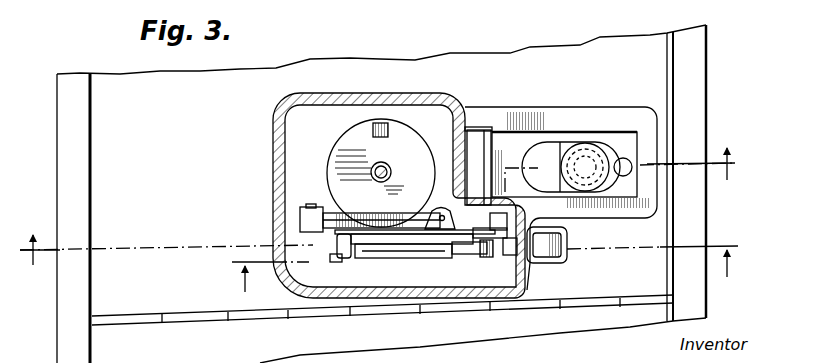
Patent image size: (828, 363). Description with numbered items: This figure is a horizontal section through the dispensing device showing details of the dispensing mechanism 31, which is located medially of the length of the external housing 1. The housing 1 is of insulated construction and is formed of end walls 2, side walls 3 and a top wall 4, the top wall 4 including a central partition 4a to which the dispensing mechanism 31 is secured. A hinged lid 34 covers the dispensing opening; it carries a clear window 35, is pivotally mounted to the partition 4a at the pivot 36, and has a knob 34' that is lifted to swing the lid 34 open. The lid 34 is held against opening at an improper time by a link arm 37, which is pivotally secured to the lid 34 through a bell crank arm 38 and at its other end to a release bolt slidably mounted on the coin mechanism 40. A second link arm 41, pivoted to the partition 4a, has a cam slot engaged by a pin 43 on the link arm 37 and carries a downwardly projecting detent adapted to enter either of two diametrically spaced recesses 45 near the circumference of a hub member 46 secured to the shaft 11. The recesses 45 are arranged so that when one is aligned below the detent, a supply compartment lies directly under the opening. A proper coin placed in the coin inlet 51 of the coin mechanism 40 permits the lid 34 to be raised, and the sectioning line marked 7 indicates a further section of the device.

The external housing 1 is at (706, 66).
The side walls 3 is at (58, 142).
The top wall 4 is at (262, 80).
The central partition 4a is at (182, 157).
The dispensing mechanism 31 is at (273, 217).
The hub member 46 is at (345, 146).
The shaft 11 is at (390, 170).
The recesses 45 is at (383, 122).
The second link arm 41 is at (362, 212).
The pin 43 is at (436, 212).
The coin mechanism 40 is at (406, 258).
The link arm 37 is at (434, 236).
The coin inlet 51 is at (462, 250).
The pivot 36 is at (479, 128).
The hinged lid 34 is at (571, 150).
The window 35 is at (568, 152).
The knob 34' is at (633, 133).
The bell crank arm 38 is at (531, 212).
The end walls 2 is at (379, 205).
The section line 7- 7 is at (485, 275).